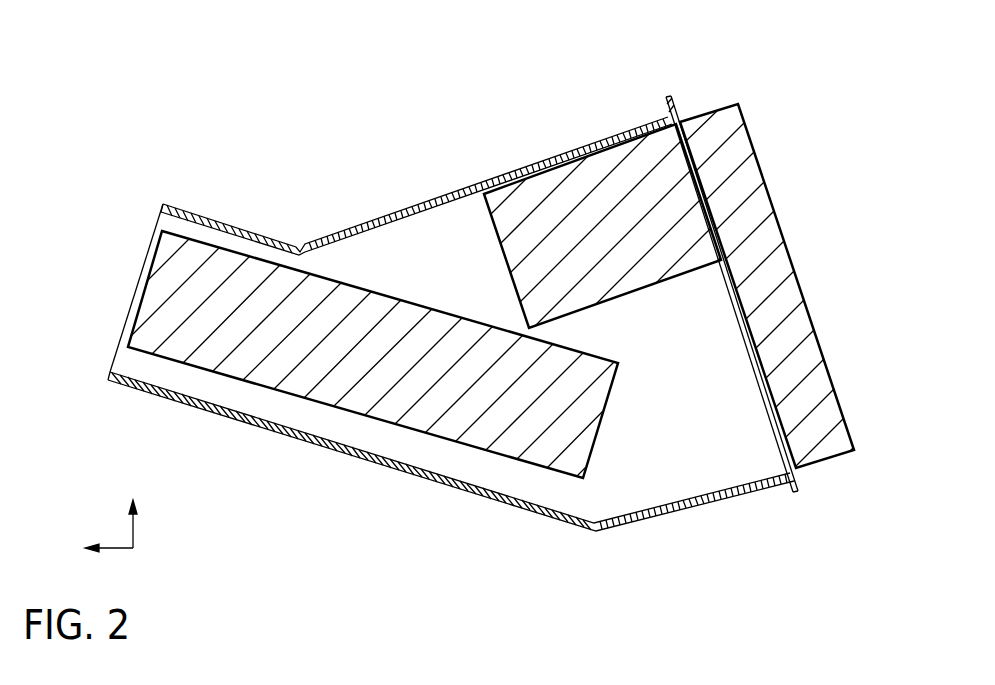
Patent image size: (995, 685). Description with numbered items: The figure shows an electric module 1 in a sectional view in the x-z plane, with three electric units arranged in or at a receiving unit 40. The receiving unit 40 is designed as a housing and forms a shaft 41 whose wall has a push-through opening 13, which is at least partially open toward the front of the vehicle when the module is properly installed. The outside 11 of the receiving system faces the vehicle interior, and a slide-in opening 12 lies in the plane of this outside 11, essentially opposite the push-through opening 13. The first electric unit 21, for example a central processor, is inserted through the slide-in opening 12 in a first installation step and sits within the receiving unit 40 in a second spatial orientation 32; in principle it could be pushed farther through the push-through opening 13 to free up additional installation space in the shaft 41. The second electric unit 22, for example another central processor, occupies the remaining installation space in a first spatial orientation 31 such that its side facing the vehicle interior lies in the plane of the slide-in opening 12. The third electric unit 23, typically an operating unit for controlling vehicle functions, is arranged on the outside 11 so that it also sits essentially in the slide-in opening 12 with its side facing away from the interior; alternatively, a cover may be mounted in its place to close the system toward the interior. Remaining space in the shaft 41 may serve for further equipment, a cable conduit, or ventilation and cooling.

The electric module 1 is at (160, 66).
The outside 11 is at (755, 369).
The slide-in opening 12 is at (787, 294).
The push-through opening 13 is at (116, 360).
The first electric unit 21 is at (373, 391).
The second electric unit 22 is at (598, 218).
The third electric unit 23 is at (727, 175).
The first spatial orientation 31 is at (547, 227).
The second spatial orientation 32 is at (486, 432).
The receiving unit 40 is at (232, 227).
The shaft 41 is at (689, 470).